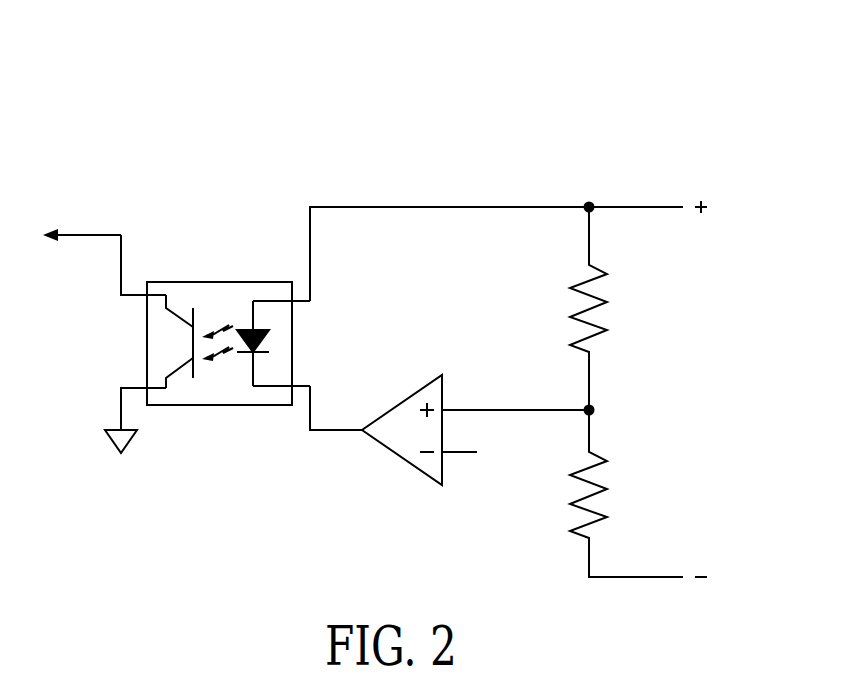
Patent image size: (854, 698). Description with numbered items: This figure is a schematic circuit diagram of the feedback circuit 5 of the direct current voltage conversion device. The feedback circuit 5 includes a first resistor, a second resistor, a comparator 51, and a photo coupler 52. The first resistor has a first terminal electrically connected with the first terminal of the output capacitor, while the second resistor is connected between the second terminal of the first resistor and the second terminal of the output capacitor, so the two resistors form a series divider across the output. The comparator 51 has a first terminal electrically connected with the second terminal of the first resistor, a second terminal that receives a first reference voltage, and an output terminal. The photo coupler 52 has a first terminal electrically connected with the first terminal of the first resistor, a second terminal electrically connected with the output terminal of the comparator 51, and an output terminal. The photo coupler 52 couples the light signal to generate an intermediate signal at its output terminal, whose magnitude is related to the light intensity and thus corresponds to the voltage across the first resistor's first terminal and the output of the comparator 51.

The feedback circuit 5 is at (405, 130).
The comparator 51 is at (407, 398).
The photo coupler 52 is at (218, 281).